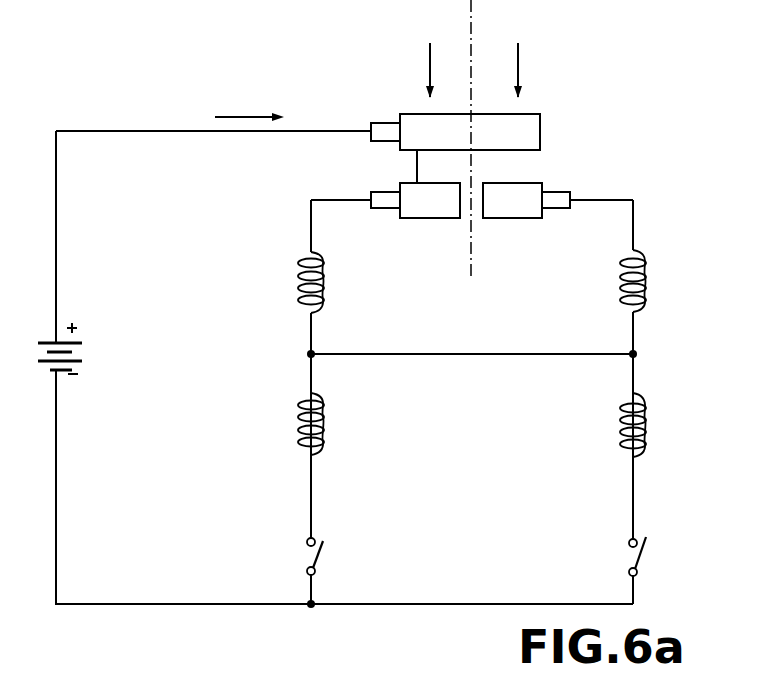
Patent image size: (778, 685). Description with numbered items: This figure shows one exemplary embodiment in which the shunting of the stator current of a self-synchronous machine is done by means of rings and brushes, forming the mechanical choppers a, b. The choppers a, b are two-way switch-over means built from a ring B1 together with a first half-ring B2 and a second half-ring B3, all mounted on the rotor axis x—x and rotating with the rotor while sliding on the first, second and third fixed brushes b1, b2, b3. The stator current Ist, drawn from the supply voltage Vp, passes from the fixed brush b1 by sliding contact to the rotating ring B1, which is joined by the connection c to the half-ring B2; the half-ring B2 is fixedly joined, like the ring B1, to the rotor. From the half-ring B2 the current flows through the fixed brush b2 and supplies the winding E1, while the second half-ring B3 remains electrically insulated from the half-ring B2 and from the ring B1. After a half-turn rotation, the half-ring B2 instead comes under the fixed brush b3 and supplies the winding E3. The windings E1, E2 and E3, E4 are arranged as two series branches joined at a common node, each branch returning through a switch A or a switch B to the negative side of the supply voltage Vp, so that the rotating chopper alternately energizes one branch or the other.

The rotor axis x is at (480, 141).
The first chopper a is at (430, 56).
The third chopper b is at (519, 56).
The stator current Ist is at (249, 104).
The ring B1 is at (513, 132).
The first fixed brush b1 is at (383, 128).
The connection c is at (417, 168).
The first half-ring B2 is at (432, 208).
The second fixed brush b2 is at (387, 200).
The second half-ring B3 is at (508, 203).
The third fixed brush b3 is at (555, 200).
The winding E1 is at (330, 282).
The winding E2 is at (330, 424).
The winding E3 is at (653, 281).
The winding E4 is at (653, 425).
The switch A is at (326, 556).
The switch B is at (649, 556).
The supply voltage Vp is at (82, 348).